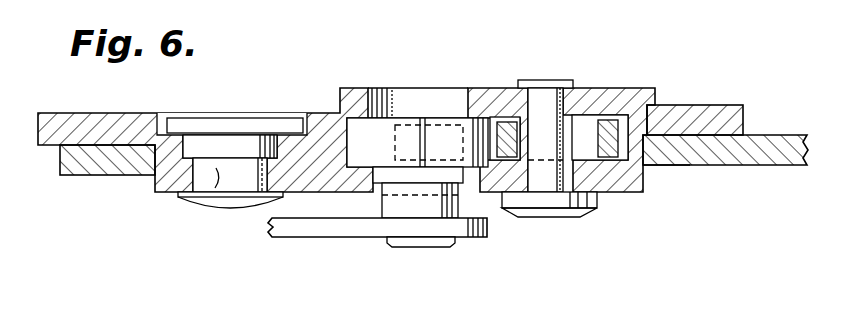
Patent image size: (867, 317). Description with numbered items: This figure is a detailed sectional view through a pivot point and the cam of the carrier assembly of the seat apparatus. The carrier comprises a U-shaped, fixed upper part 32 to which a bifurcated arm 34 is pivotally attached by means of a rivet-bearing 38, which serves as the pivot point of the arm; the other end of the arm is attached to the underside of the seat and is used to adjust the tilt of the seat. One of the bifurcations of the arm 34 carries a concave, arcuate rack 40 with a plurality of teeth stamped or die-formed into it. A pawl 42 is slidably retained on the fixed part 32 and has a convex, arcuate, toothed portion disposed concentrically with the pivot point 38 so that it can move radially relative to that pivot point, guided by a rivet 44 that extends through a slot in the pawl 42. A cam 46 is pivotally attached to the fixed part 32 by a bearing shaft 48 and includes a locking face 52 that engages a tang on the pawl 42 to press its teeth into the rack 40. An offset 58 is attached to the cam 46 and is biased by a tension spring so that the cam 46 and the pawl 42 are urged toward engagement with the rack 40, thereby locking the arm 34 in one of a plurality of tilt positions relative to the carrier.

The fixed upper part 32 is at (715, 112).
The bifurcated arm 34 is at (745, 150).
The rivet-bearing 38 is at (198, 205).
The rack 40 is at (658, 167).
The pawl 42 is at (610, 110).
The rivet 44 is at (548, 222).
The cam 46 is at (385, 137).
The bearing shaft 48 is at (433, 248).
The locking face 52 is at (430, 113).
The offset 58 is at (292, 230).